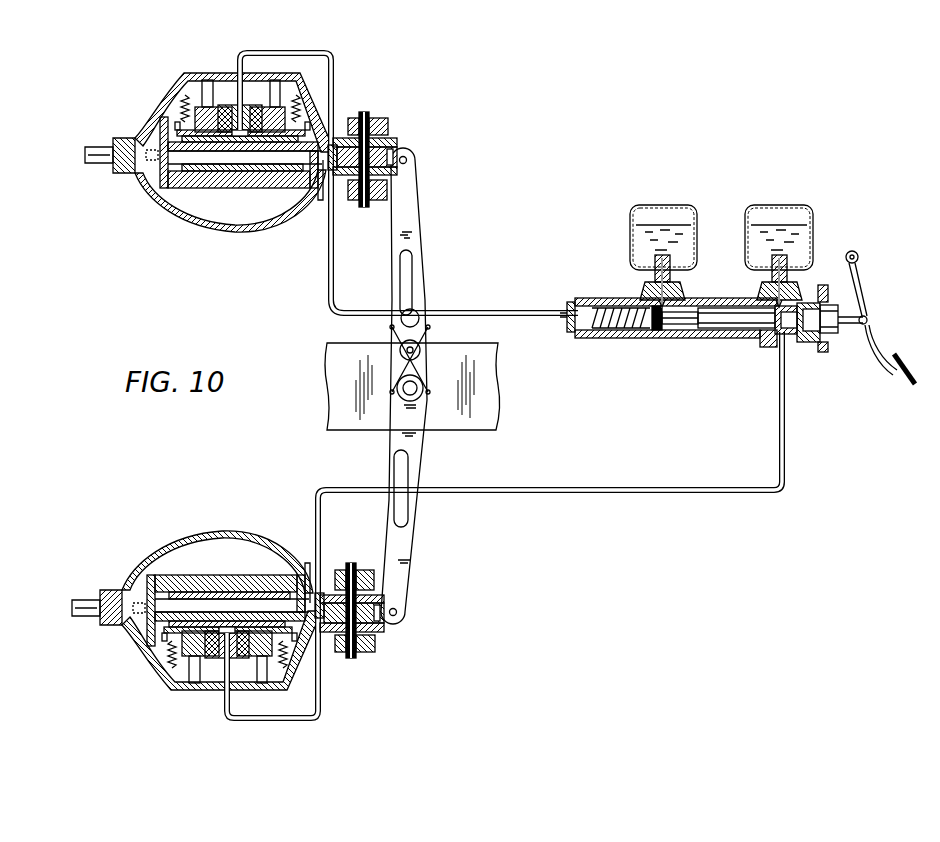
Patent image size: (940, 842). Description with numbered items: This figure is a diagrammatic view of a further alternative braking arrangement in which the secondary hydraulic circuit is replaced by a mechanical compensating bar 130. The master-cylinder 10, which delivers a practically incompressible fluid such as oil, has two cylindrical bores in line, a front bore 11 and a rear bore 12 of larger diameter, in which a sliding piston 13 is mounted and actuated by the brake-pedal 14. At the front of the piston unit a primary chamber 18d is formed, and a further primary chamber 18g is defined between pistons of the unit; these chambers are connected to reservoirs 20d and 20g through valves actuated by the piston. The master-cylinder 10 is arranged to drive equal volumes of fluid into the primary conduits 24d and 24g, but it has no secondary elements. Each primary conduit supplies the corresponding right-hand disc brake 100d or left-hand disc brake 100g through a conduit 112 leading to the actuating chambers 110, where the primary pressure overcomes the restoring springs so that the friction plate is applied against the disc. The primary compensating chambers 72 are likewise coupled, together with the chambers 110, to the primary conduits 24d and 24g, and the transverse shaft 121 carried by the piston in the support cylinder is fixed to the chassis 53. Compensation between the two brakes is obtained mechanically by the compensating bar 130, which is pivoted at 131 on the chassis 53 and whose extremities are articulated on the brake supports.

The master-cylinder 10 is at (829, 360).
The front bore 11 is at (604, 306).
The rear bore 12 is at (800, 302).
The sliding piston 13 is at (845, 342).
The brake-pedal 14 is at (908, 371).
The primary chamber 18d is at (679, 332).
The primary chamber 18g is at (802, 348).
The reservoir 20d is at (659, 223).
The reservoir 20g is at (775, 223).
The primary conduit 24d is at (473, 310).
The primary conduit 24g is at (506, 492).
The chassis 53 is at (383, 117).
The primary compensating chamber 72 is at (334, 150).
The disc brake 100d is at (256, 233).
The disc brake 100g is at (227, 533).
The actuating chamber 110 is at (198, 125).
The conduit 112 is at (337, 72).
The transverse shaft 121 is at (365, 203).
The mechanical compensating bar 130 is at (416, 246).
The pivot 131 is at (412, 391).